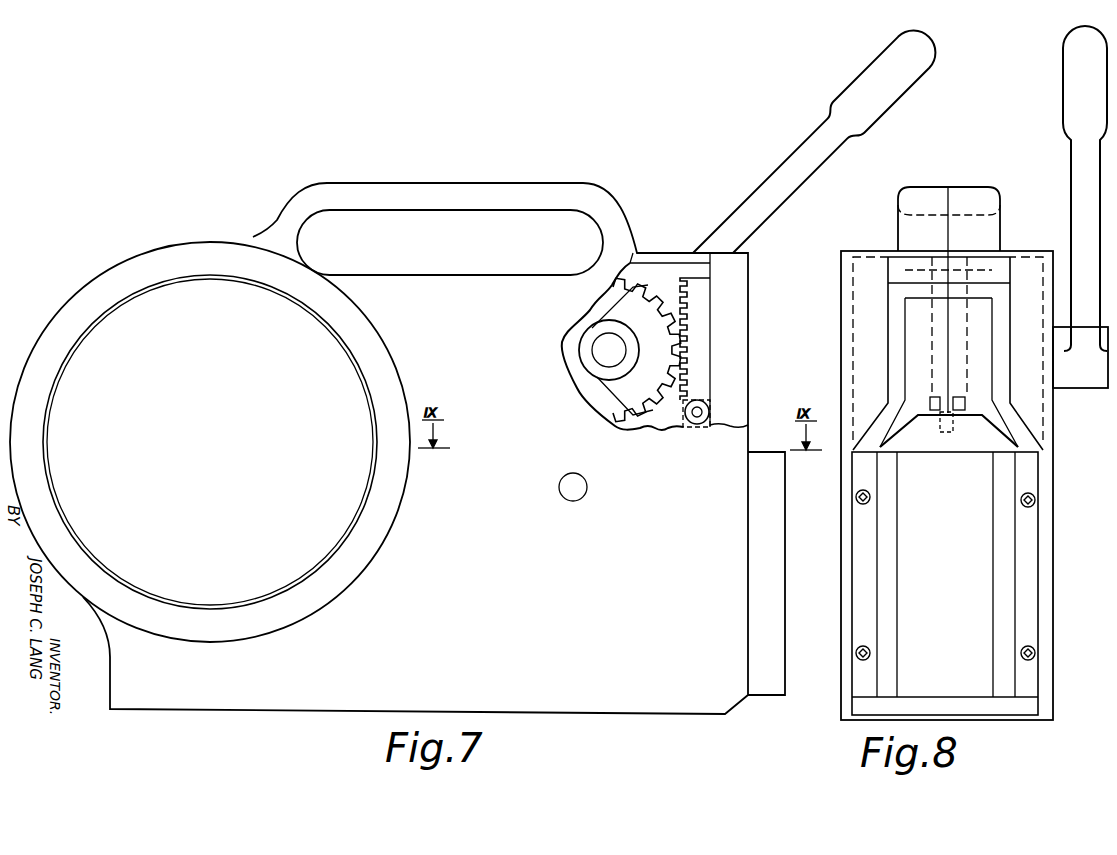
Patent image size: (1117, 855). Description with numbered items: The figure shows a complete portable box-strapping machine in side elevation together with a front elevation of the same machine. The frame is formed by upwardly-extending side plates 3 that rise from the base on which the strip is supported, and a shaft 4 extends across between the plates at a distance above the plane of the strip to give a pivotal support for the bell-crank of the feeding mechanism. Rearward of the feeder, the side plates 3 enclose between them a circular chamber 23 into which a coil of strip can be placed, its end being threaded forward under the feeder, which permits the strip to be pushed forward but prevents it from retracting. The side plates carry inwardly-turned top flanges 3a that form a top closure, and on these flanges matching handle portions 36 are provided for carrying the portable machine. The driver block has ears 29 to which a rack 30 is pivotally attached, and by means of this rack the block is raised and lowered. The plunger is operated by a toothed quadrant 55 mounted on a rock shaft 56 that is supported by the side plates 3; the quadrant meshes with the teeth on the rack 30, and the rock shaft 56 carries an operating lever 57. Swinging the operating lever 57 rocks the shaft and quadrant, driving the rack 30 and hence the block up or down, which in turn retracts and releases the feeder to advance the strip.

In FIG. 7, the side plates 3 is at (492, 495).
In FIG. 8, the side plates 3 is at (840, 374).
In FIG. 8, the inwardly-turned top flanges 3a is at (866, 252).
In FIG. 7, the shaft 4 is at (587, 485).
In FIG. 7, the circular chamber 23 is at (128, 318).
In FIG. 7, the ears 29 is at (712, 420).
In FIG. 7, the rack 30 is at (705, 357).
In FIG. 7, the handle 36 is at (433, 193).
In FIG. 8, the handle 36 is at (975, 195).
In FIG. 7, the toothed quadrant 55 is at (617, 313).
In FIG. 7, the rock shaft 56 is at (598, 357).
In FIG. 7, the operating lever 57 is at (793, 160).
In FIG. 8, the operating lever 57 is at (1068, 109).